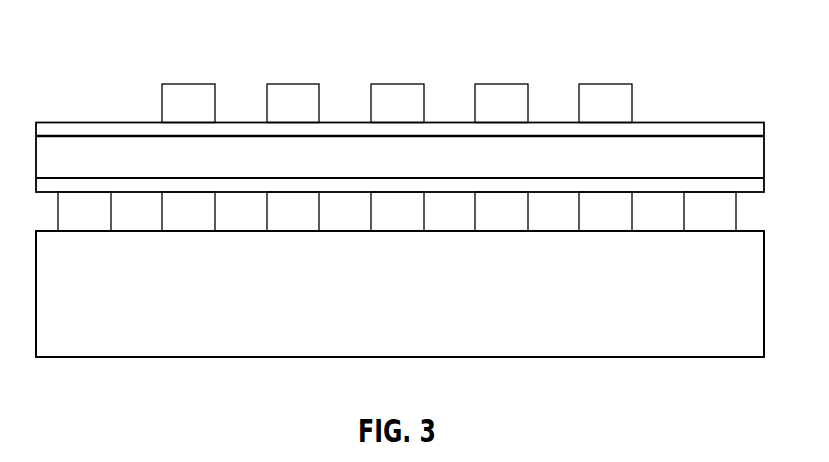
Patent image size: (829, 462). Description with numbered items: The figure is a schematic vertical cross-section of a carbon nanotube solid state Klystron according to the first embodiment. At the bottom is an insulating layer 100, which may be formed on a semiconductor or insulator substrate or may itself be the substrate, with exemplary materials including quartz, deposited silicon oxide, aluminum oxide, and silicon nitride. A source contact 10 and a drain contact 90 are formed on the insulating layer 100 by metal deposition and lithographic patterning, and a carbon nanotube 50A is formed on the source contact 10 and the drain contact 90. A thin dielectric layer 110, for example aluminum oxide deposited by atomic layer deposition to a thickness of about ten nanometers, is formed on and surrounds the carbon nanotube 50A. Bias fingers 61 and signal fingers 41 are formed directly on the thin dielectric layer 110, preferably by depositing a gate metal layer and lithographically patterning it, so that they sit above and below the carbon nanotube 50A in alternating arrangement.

The insulating layer 100 is at (418, 309).
The thin dielectric layer 110 is at (112, 123).
The carbon nanotube 50A is at (407, 168).
The signal fingers 41 is at (204, 115).
The bias fingers 61 is at (308, 115).
The drain contact 90 is at (100, 224).
The source contact 10 is at (725, 224).